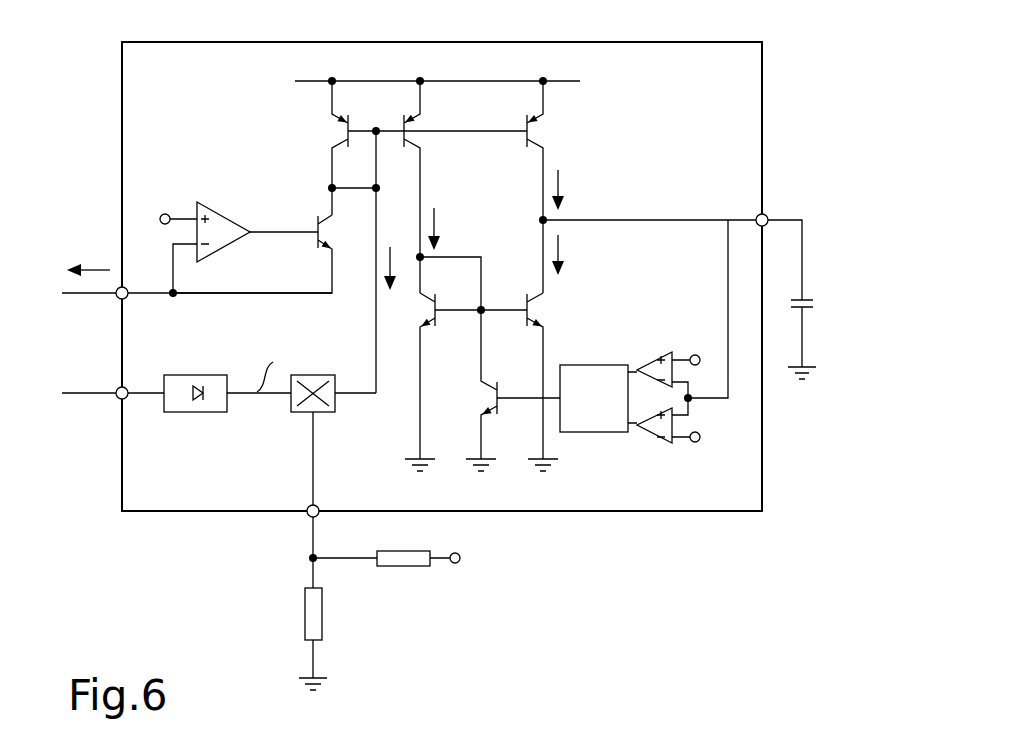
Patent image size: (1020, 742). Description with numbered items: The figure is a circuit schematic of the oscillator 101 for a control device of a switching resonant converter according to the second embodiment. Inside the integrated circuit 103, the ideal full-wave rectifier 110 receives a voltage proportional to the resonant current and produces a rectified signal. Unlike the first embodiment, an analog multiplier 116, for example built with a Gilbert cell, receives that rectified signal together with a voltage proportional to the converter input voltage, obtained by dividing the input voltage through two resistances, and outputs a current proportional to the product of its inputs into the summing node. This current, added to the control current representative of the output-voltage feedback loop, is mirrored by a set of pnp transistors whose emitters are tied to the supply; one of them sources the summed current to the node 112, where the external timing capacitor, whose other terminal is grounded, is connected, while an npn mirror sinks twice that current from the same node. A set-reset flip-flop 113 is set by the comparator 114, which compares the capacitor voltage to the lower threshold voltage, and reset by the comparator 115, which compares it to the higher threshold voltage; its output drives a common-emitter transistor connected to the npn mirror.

The oscillator 101 is at (91, 143).
The integrated circuit 103 is at (683, 42).
The ideal full-wave rectifier 110 is at (188, 375).
The node 112 is at (766, 213).
The set-reset flip-flop 113 is at (593, 432).
The comparator 114 is at (657, 367).
The comparator 115 is at (653, 432).
The analog multiplier 116 is at (335, 398).